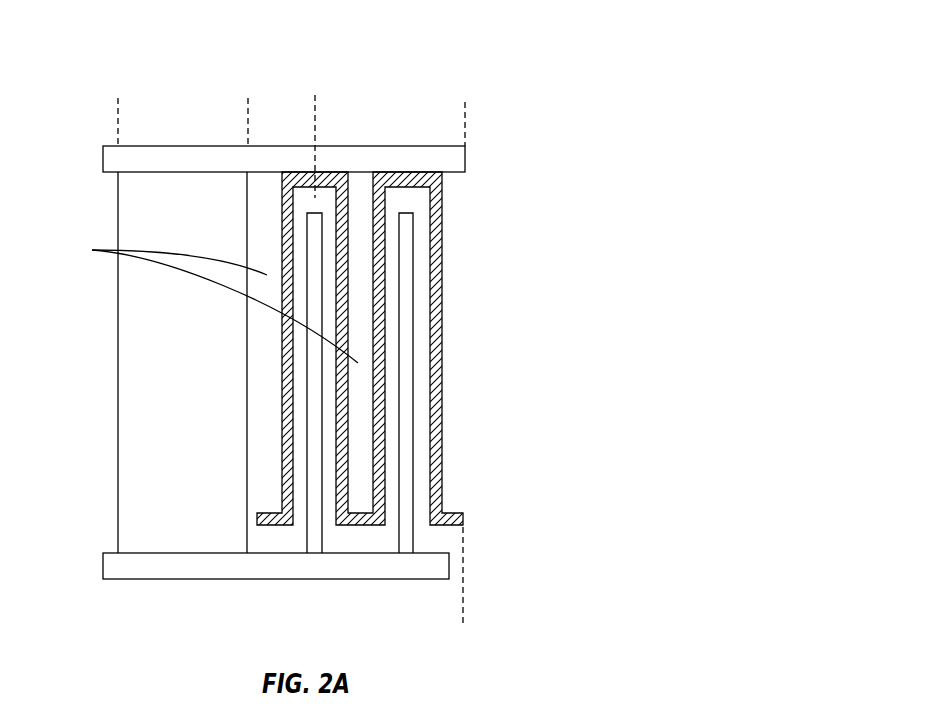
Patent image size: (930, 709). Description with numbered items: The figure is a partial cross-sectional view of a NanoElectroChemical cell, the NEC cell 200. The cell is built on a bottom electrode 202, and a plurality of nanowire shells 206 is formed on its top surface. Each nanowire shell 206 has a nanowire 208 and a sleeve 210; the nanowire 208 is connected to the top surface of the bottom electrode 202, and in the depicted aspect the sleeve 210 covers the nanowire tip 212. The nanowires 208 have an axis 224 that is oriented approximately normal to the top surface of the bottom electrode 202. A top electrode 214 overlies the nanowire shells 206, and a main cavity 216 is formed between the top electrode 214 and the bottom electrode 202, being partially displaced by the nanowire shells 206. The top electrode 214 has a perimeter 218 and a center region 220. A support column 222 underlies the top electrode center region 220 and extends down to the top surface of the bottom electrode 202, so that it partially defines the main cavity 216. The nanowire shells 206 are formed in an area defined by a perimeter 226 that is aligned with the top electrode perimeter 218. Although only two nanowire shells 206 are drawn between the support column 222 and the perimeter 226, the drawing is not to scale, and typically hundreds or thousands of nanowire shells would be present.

The NEC cell 200 is at (487, 41).
The bottom electrode 202 is at (450, 567).
The nanowire shell 206 is at (465, 354).
The nanowire 208 is at (413, 308).
The sleeve 210 is at (442, 252).
The nanowire tip 212 is at (400, 215).
The top electrode 214 is at (465, 160).
The main cavity 216 is at (201, 302).
The perimeter 218 is at (465, 120).
The center region 220 is at (247, 118).
The support column 222 is at (202, 373).
The axis 224 is at (315, 125).
The perimeter 226 is at (463, 602).